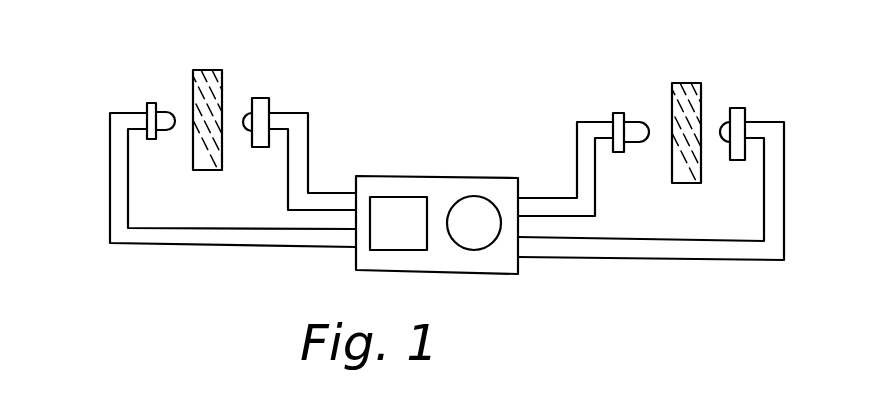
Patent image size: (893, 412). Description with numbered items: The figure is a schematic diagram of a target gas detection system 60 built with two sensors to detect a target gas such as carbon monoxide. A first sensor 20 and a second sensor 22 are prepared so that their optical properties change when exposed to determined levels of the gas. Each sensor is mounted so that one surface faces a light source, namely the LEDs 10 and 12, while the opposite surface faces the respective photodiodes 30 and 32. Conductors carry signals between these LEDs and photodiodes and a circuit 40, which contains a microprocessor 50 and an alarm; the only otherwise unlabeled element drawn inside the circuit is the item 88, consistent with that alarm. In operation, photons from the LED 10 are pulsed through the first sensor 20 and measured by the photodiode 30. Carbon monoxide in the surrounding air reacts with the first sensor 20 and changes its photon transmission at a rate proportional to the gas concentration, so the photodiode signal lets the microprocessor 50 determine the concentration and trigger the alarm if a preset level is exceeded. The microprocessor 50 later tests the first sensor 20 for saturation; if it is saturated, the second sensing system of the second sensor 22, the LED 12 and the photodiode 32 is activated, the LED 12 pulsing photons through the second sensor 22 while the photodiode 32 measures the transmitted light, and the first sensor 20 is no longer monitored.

The target gas detection system 60 is at (166, 80).
The LED 10 is at (164, 108).
The LED 12 is at (635, 120).
The first sensor 20 is at (222, 97).
The second sensor 22 is at (699, 102).
The photodiode 30 is at (268, 98).
The photodiode 32 is at (738, 108).
The circuit 40 is at (477, 274).
The microprocessor 50 is at (390, 202).
The indicator 88 is at (474, 213).